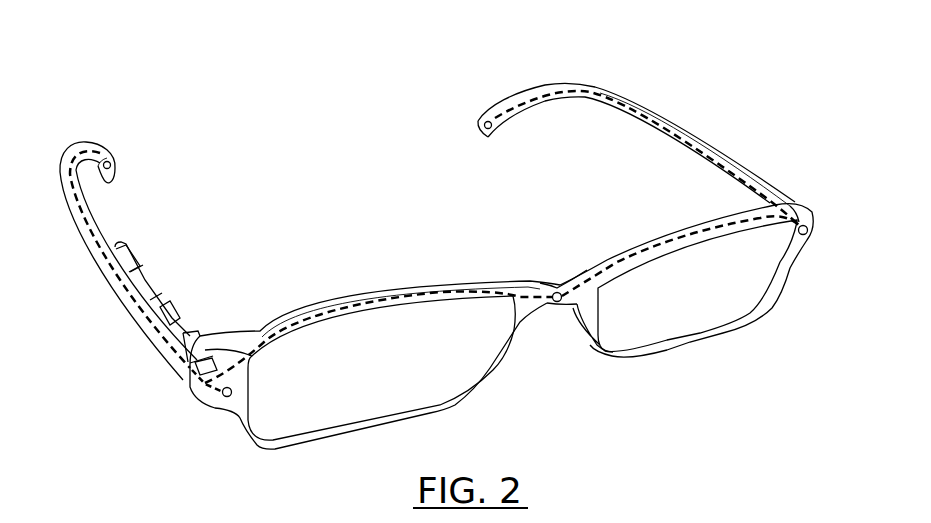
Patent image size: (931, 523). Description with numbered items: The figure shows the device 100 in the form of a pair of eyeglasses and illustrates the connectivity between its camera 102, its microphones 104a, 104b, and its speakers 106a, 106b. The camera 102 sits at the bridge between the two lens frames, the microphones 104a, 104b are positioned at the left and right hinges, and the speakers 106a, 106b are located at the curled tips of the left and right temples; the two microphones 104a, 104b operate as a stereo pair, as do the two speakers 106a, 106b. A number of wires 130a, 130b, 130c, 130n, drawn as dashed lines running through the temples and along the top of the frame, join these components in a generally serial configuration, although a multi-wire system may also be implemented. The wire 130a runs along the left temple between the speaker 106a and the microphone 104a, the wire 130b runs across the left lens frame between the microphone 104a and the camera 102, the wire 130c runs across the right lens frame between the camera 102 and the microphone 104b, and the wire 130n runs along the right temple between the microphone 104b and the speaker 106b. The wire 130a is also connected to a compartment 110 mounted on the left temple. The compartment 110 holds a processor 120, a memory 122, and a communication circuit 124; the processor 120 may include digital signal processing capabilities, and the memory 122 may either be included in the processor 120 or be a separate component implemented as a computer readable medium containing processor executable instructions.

The device 100 is at (327, 57).
The camera 102 is at (548, 288).
The microphone 104a is at (230, 408).
The microphone 104b is at (840, 207).
The speaker 106a is at (112, 152).
The speaker 106b is at (486, 137).
The compartment 110 is at (153, 283).
The processor 120 is at (170, 310).
The memory 122 is at (202, 337).
The communication circuit 124 is at (130, 253).
The wire 130a is at (118, 296).
The wire 130b is at (390, 307).
The wire 130c is at (697, 235).
The wire 130n is at (660, 130).